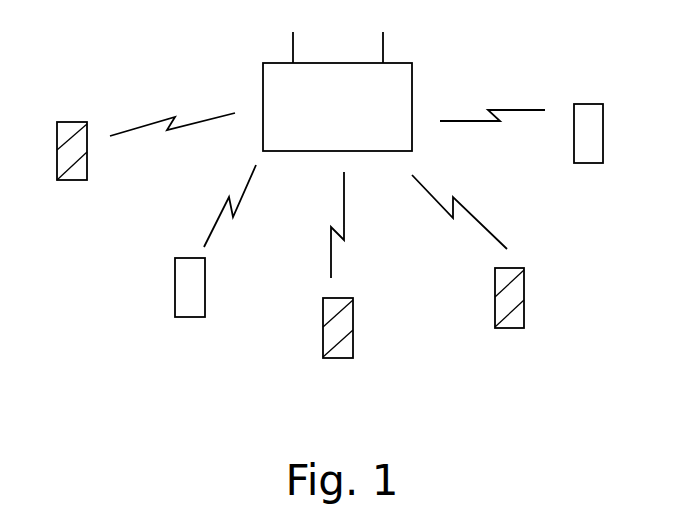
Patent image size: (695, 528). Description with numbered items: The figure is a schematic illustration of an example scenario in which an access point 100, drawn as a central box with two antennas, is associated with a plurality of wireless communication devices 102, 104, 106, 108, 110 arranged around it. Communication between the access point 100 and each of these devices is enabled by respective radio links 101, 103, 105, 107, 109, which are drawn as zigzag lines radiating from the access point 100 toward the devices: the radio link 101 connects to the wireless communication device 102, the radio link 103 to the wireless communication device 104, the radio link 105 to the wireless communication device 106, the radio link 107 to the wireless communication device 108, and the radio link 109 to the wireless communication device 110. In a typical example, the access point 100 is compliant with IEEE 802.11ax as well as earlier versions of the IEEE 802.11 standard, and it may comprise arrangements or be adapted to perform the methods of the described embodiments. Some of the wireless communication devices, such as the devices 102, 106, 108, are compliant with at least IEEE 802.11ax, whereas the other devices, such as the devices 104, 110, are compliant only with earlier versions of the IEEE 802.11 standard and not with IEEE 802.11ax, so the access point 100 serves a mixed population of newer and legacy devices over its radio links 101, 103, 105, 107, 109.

The access point 100 is at (337, 91).
The radio link 101 is at (163, 122).
The wireless communication device 102 is at (57, 165).
The radio link 103 is at (228, 205).
The wireless communication device 104 is at (175, 298).
The radio link 105 is at (330, 241).
The wireless communication device 106 is at (323, 342).
The radio link 107 is at (482, 222).
The wireless communication device 108 is at (524, 312).
The radio link 109 is at (515, 108).
The wireless communication device 110 is at (603, 137).